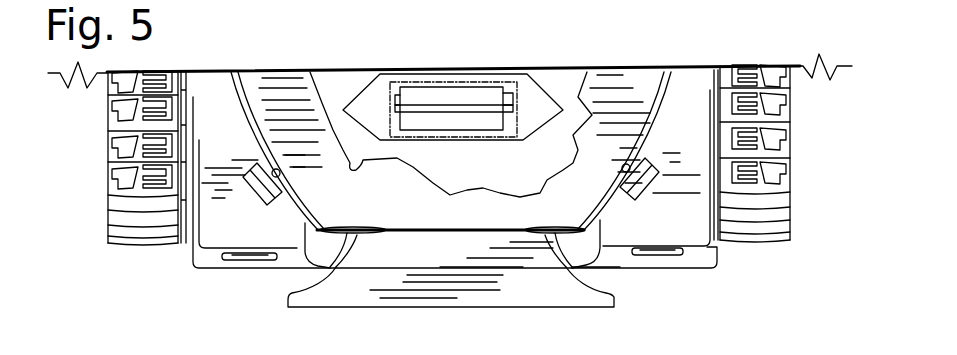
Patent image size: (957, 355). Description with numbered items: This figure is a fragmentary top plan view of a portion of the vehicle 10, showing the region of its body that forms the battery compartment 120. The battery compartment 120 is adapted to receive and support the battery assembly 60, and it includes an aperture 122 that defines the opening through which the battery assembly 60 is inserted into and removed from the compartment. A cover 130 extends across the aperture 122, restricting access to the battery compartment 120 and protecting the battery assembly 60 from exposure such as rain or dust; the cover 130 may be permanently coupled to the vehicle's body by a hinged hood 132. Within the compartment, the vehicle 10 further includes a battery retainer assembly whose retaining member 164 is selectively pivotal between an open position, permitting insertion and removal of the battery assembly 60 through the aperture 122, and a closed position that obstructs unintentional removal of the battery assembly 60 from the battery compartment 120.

The vehicle 10 is at (92, 207).
The battery assembly 60 is at (502, 122).
The battery compartment 120 is at (518, 97).
The aperture 122 is at (387, 127).
The cover 130 is at (247, 70).
The hinged hood 132 is at (300, 70).
The retaining member 164 is at (472, 109).